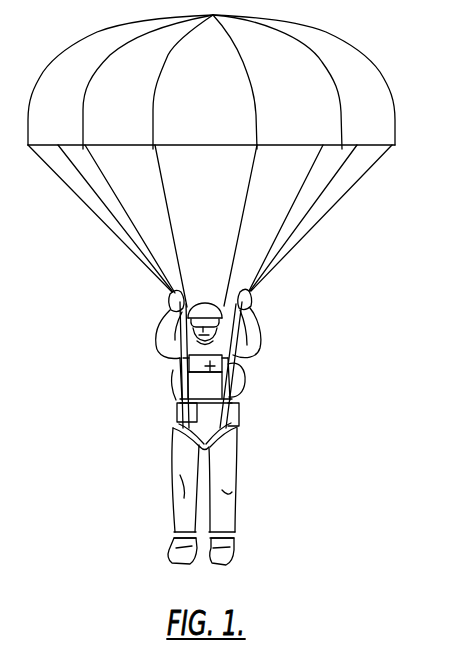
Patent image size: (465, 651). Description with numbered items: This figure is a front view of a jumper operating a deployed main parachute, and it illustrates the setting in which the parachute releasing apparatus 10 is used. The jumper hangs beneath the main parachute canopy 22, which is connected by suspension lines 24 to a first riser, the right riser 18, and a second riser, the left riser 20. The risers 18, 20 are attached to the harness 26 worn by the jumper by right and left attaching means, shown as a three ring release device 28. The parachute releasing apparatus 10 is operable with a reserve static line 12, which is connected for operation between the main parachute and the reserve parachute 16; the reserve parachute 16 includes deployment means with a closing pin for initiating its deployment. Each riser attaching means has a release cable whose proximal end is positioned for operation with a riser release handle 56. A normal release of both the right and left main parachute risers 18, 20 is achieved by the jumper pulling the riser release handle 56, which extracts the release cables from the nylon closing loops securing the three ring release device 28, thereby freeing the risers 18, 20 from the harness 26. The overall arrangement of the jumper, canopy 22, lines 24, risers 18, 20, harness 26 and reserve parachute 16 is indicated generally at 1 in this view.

The parachute system 1 is at (405, 98).
The parachute releasing apparatus 10 is at (177, 404).
The reserve static line 12 is at (240, 373).
The reserve parachute 16 is at (240, 405).
The right riser 18 is at (182, 322).
The left riser 20 is at (247, 317).
The main parachute canopy 22 is at (333, 60).
The suspension lines 24 is at (302, 237).
The harness 26 is at (183, 362).
The three ring release device 28 is at (450, 429).
The riser release handle 56 is at (180, 455).